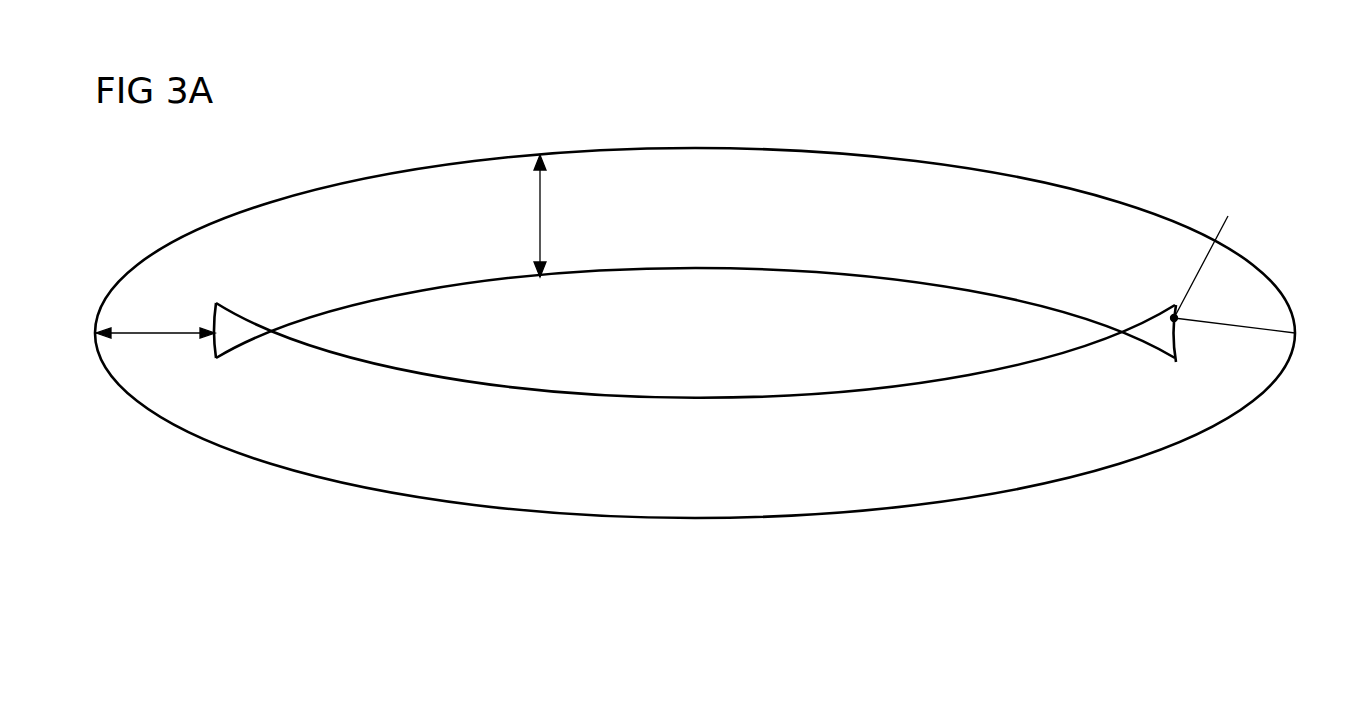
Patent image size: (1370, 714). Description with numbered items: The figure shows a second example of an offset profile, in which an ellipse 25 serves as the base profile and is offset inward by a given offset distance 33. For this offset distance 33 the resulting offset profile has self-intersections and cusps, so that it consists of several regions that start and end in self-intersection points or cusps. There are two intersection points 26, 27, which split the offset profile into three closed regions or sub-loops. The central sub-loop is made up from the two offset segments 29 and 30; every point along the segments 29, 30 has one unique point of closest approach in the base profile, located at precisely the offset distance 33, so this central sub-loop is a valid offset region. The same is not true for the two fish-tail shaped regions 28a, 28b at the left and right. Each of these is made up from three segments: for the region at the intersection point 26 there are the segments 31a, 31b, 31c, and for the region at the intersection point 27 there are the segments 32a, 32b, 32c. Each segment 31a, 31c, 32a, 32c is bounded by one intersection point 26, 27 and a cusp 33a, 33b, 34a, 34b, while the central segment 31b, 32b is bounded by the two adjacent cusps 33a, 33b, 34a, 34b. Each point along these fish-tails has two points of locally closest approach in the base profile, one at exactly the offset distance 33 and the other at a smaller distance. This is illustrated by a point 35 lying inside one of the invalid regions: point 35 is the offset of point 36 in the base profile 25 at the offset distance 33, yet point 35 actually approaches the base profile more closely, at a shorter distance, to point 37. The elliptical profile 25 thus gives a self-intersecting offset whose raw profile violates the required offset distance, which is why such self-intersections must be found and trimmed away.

The ellipse 25 is at (695, 148).
The offset segment 29 is at (692, 268).
The offset segment 30 is at (688, 398).
The intersection point 26 is at (265, 330).
The intersection point 27 is at (1123, 329).
The fish-tail shaped region 28a is at (242, 337).
The fish-tail shaped region 28b is at (1149, 336).
The segment 31a is at (235, 355).
The central segment 31b is at (216, 347).
The segment 31c is at (232, 311).
The segment 32a is at (1159, 309).
The central segment 32b is at (1178, 349).
The segment 32c is at (1158, 357).
The offset distance 33 is at (547, 214).
The cusp 33a is at (216, 302).
The cusp 33b is at (216, 359).
The cusp 34a is at (1177, 304).
The cusp 34b is at (1176, 363).
The point 35 is at (1178, 313).
The point 36 is at (1295, 333).
The point 37 is at (1228, 216).